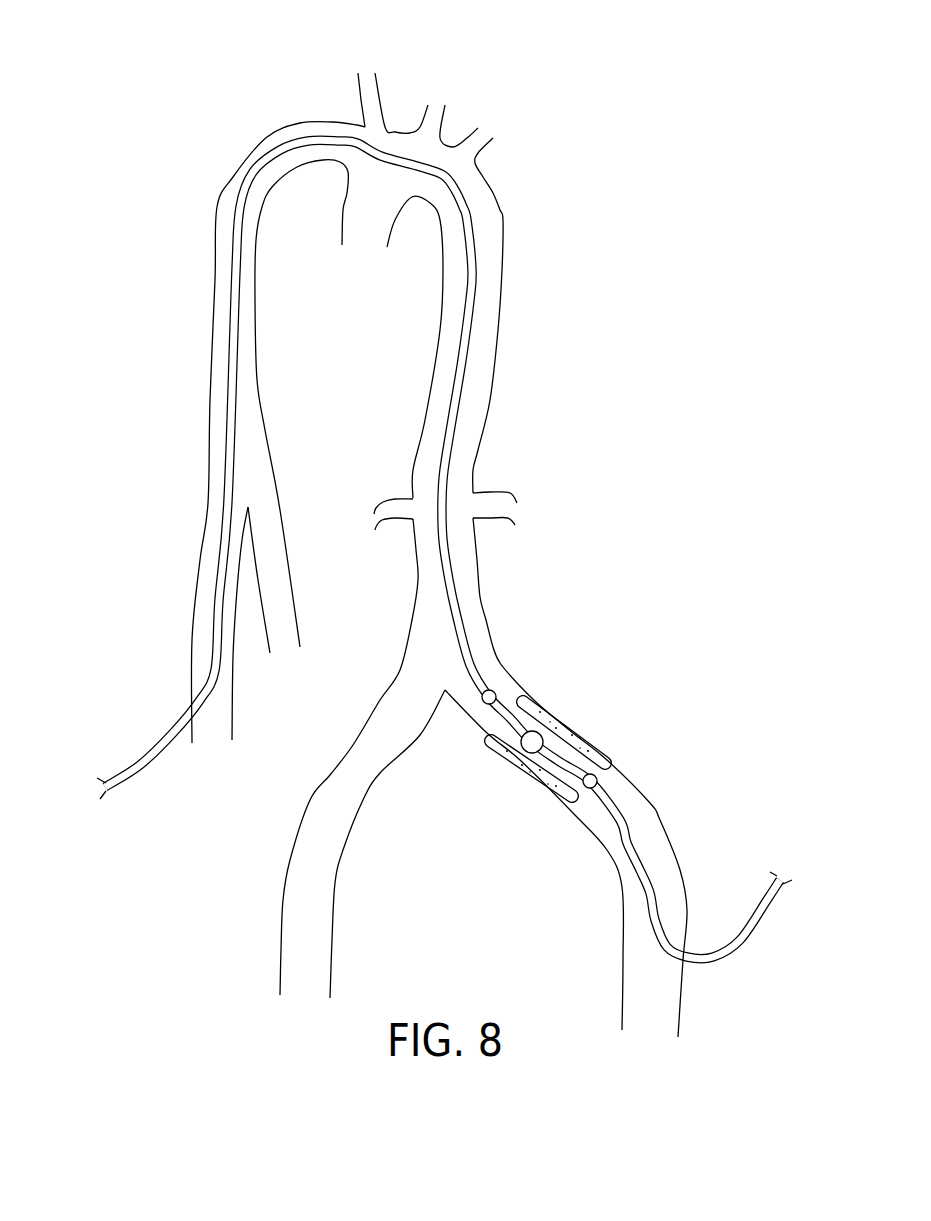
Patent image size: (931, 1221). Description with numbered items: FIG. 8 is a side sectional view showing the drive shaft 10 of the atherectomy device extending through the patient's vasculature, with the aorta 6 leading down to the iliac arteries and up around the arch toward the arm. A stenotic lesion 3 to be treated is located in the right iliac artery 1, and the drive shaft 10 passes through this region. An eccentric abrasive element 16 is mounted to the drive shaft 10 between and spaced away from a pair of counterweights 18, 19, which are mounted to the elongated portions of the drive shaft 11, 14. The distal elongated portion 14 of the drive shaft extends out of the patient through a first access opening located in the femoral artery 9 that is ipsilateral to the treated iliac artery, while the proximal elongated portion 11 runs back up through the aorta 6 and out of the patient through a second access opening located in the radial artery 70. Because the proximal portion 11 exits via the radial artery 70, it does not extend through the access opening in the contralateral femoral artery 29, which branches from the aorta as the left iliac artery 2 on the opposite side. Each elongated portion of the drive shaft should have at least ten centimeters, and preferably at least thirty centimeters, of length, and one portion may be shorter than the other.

The right iliac artery 1 is at (650, 803).
The left iliac artery 2 is at (340, 750).
The stenotic lesion 3 is at (585, 740).
The aorta 6 is at (503, 318).
The femoral artery 9 is at (623, 983).
The drive shaft 10 is at (135, 790).
The proximal elongated portion of the drive shaft 11 is at (458, 613).
The distal elongated portion of the drive shaft 14 is at (648, 893).
The eccentric abrasive element 16 is at (523, 750).
The counterweight 18 is at (495, 690).
The counterweight 19 is at (588, 790).
The contralateral femoral artery 29 is at (282, 943).
The radial artery 70 is at (192, 648).